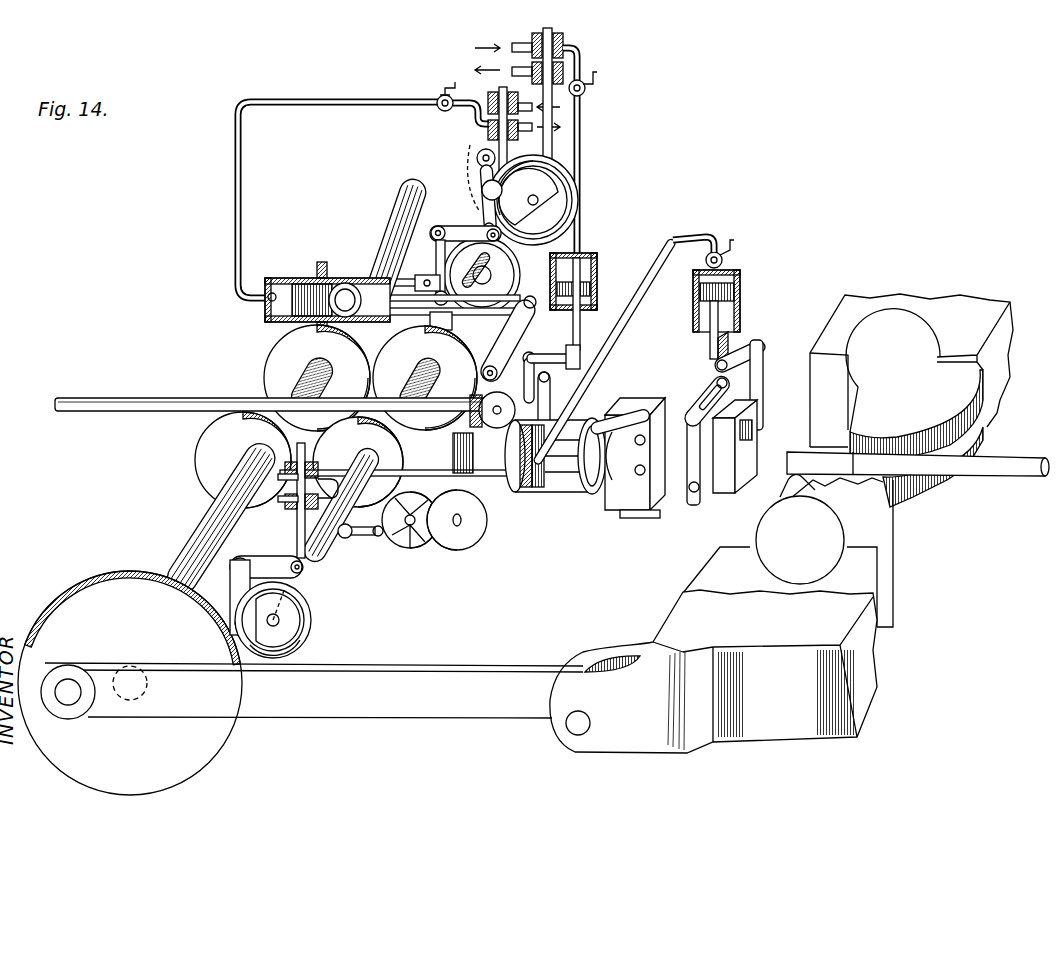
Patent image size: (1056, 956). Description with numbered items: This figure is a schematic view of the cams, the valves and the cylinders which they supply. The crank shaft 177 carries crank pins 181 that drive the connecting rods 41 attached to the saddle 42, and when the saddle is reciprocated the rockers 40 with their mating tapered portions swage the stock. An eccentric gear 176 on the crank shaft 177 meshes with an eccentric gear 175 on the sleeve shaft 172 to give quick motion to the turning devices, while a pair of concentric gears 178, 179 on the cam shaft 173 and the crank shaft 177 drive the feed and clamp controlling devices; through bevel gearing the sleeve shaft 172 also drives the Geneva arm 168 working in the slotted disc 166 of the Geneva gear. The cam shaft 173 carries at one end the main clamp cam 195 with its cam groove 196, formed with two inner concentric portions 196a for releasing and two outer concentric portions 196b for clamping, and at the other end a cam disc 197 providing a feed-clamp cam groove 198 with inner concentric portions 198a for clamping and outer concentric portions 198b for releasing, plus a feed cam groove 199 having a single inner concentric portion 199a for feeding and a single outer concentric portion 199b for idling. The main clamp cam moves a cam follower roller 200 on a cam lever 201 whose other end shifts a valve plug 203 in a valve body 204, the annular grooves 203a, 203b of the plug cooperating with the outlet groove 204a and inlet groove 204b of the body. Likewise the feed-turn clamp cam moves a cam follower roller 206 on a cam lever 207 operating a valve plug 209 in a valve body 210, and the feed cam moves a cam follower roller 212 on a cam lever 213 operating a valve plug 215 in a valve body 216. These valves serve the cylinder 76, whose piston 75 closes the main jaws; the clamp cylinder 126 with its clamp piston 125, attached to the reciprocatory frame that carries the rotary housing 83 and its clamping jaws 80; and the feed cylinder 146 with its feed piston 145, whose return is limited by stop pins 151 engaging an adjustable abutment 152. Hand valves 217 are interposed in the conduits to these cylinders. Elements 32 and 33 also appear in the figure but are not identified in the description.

The clamp bracket 32 is at (775, 337).
The link rod 33 is at (595, 350).
The rockers 40 is at (848, 460).
The connecting rods 41 is at (314, 690).
The saddle 42 is at (713, 671).
The piston 75 is at (743, 283).
The cylinder 76 is at (697, 313).
The clamping jaws 80 is at (653, 423).
The rotary housing 83 is at (527, 458).
The clamp piston 125 is at (572, 293).
The clamp cylinder 126 is at (597, 266).
The feed piston 145 is at (312, 292).
The feed cylinder 146 is at (283, 327).
The stop pins 151 is at (367, 323).
The adjustable abutment 152 is at (305, 292).
The disc 166 is at (457, 533).
The Geneva arm 168 is at (430, 567).
The sleeve shaft 172 is at (380, 457).
The cam shaft 173 is at (456, 370).
The eccentric gear 175 is at (418, 386).
The eccentric gear 176 is at (250, 383).
The crank shaft 177 is at (230, 520).
The concentric gear 178 is at (430, 330).
The concentric gear 179 is at (318, 396).
The crank pins 181 is at (70, 690).
The main clamp cam 195 is at (280, 633).
The cam groove 196 is at (303, 620).
The inner concentric portions 196a is at (287, 598).
The outer concentric portions 196b is at (293, 650).
The cam disc 197 is at (537, 202).
The feed-clamp cam groove 198 is at (555, 222).
The inner concentric portions 198a is at (510, 188).
The outer concentric portions 198b is at (513, 202).
The feed cam groove 199 is at (500, 257).
The inner concentric portion 199a is at (482, 215).
The outer concentric portion 199b is at (440, 252).
The cam follower roller 200 is at (213, 615).
The cam lever 201 is at (205, 560).
The valve plug 203 is at (297, 523).
The annular groove 203a is at (243, 460).
The annular groove 203b is at (271, 481).
The valve body 204 is at (308, 463).
The outlet groove 204a is at (300, 470).
The inlet groove 204b is at (271, 502).
The cam follower roller 206 is at (477, 157).
The cam lever 207 is at (478, 128).
The valve plug 209 is at (585, 68).
The valve body 210 is at (556, 50).
The cam follower roller 212 is at (440, 293).
The cam lever 213 is at (425, 248).
The valve plug 215 is at (497, 85).
The valve body 216 is at (590, 88).
The hand valves 217 is at (562, 78).